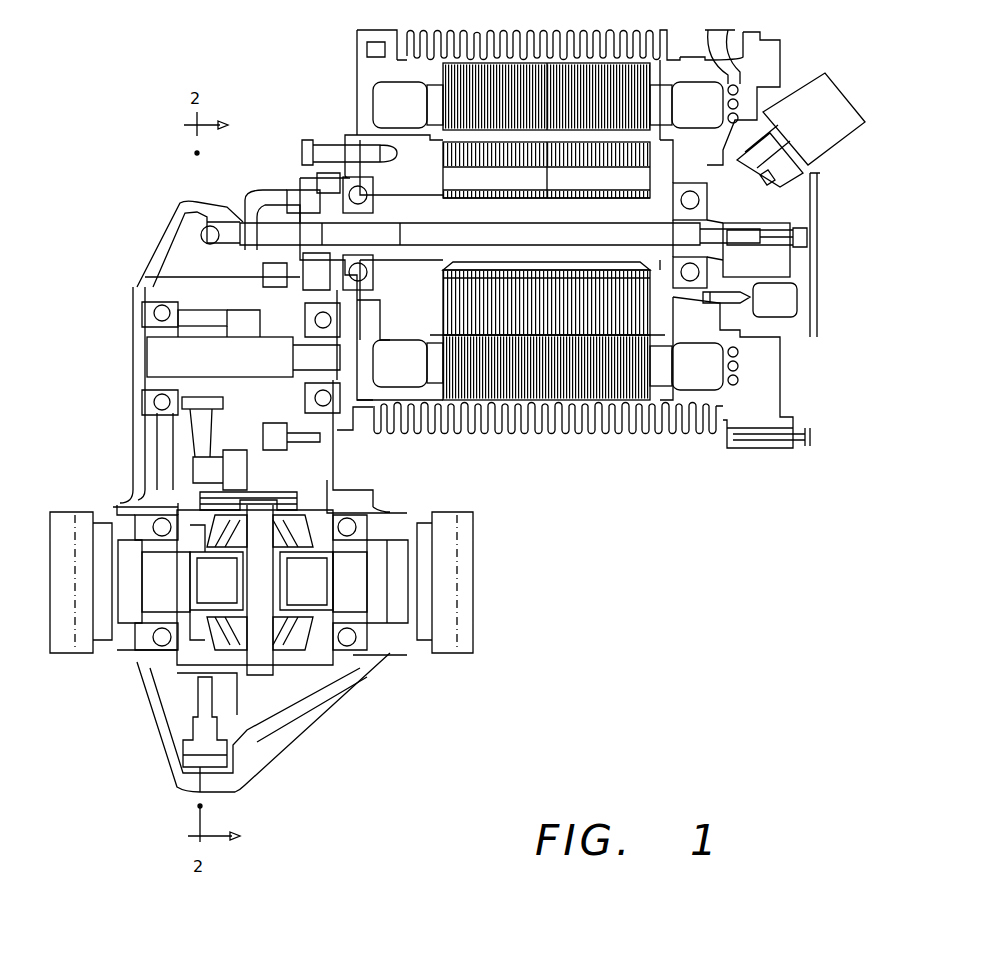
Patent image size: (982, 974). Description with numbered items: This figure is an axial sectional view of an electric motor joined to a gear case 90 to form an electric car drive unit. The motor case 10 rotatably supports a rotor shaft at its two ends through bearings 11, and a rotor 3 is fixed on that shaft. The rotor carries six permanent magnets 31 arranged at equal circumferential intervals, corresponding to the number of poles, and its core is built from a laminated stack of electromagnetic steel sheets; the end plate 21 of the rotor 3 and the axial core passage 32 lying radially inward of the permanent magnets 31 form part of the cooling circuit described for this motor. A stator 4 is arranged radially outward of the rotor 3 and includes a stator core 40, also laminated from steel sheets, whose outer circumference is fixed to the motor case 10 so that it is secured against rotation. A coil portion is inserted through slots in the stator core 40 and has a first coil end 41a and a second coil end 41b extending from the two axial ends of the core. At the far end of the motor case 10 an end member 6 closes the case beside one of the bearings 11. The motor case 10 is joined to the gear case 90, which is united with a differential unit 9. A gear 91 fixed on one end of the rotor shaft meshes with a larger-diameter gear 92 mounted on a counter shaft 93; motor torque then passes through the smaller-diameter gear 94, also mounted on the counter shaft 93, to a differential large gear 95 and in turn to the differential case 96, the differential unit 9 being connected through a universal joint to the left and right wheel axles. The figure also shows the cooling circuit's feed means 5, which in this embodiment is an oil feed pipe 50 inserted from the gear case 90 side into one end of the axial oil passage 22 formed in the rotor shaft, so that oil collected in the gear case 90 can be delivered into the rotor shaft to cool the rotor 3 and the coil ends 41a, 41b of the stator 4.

The rotor 3 is at (420, 297).
The stator 4 is at (564, 409).
The feed means 5 is at (184, 238).
The end plate 6 is at (808, 263).
The differential unit 9 is at (125, 494).
The motor case 10 is at (357, 85).
The bearings 11 is at (370, 188).
The rotor core 21 is at (432, 314).
The axial oil passage 22 is at (500, 236).
The permanent magnets 31 is at (445, 150).
The rotor core plate 32 is at (515, 182).
The stator core 40 is at (630, 400).
The first coil end 41a is at (390, 105).
The second coil end 41b is at (710, 375).
The oil feed pipe 50 is at (250, 222).
The gear case 90 is at (337, 465).
The gear 91 is at (300, 193).
The larger-diameter gear 92 is at (275, 308).
The counter shaft 93 is at (253, 380).
The smaller-diameter gear 94 is at (208, 312).
The differential large gear 95 is at (208, 415).
The differential case 96 is at (283, 660).